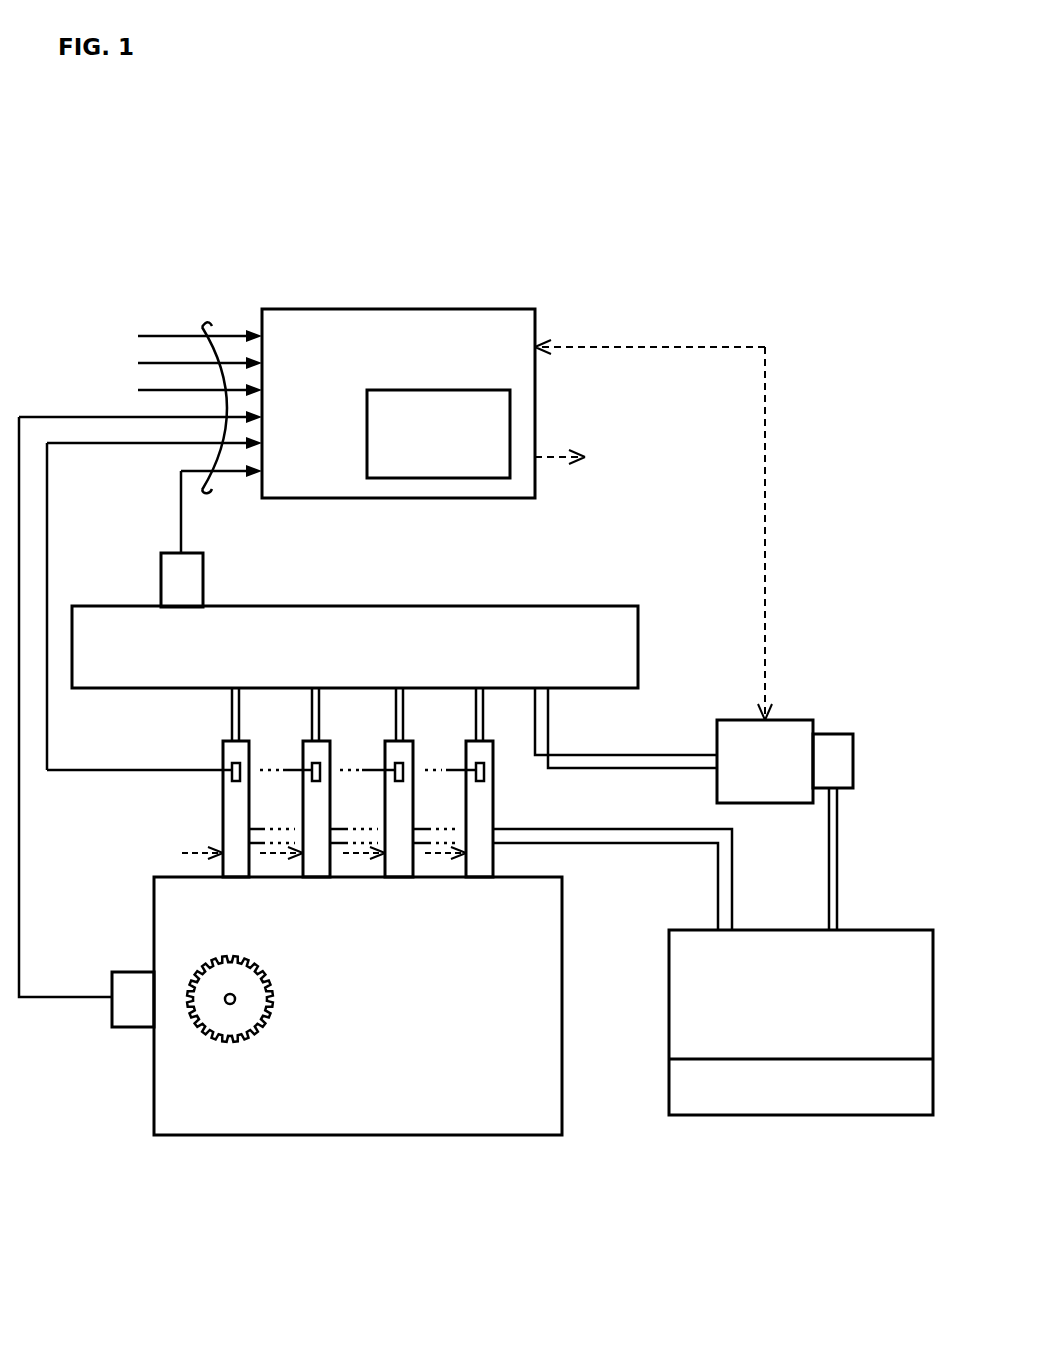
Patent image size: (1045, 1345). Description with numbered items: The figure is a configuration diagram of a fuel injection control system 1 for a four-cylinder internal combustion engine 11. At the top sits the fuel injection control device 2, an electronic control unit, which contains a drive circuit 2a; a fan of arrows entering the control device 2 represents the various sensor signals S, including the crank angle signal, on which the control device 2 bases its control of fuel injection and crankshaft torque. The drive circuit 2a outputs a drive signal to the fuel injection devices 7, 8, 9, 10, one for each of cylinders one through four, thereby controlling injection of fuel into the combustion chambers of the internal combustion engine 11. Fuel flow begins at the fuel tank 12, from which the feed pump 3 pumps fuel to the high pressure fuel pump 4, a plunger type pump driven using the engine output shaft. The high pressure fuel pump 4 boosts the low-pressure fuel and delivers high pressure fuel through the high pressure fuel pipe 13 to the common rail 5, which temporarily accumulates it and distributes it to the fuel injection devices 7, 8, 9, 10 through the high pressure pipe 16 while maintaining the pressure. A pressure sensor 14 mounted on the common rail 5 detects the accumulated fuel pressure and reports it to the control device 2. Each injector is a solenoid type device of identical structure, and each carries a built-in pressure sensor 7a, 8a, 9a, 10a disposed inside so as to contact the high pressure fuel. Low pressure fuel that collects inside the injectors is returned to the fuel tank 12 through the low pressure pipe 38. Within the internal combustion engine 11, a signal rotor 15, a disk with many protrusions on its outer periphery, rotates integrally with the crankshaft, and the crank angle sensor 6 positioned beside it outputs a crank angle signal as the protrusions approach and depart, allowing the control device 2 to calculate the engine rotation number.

The fuel injection control system 1 is at (641, 236).
The fuel injection control device 2 is at (395, 309).
The drive circuit 2a is at (367, 428).
The sensor signal S is at (205, 325).
The feed pump 3 is at (832, 734).
The high pressure fuel pump 4 is at (790, 720).
The common rail 5 is at (441, 606).
The crank angle sensor 6 is at (130, 972).
The fuel injection device 7 is at (223, 756).
The built-in pressure sensor 7a is at (233, 781).
The fuel injection device 8 is at (303, 762).
The built-in pressure sensor 8a is at (313, 781).
The fuel injection device 9 is at (385, 762).
The built-in pressure sensor 9a is at (397, 781).
The fuel injection device 10 is at (493, 762).
The built-in pressure sensor 10a is at (481, 781).
The internal combustion engine 11 is at (154, 893).
The fuel tank 12 is at (695, 930).
The high pressure fuel pipe 13 is at (660, 755).
The pressure sensor 14 is at (203, 572).
The signal rotor 15 is at (250, 964).
The high pressure pipe 16 is at (231, 712).
The low pressure pipe 38 is at (632, 829).